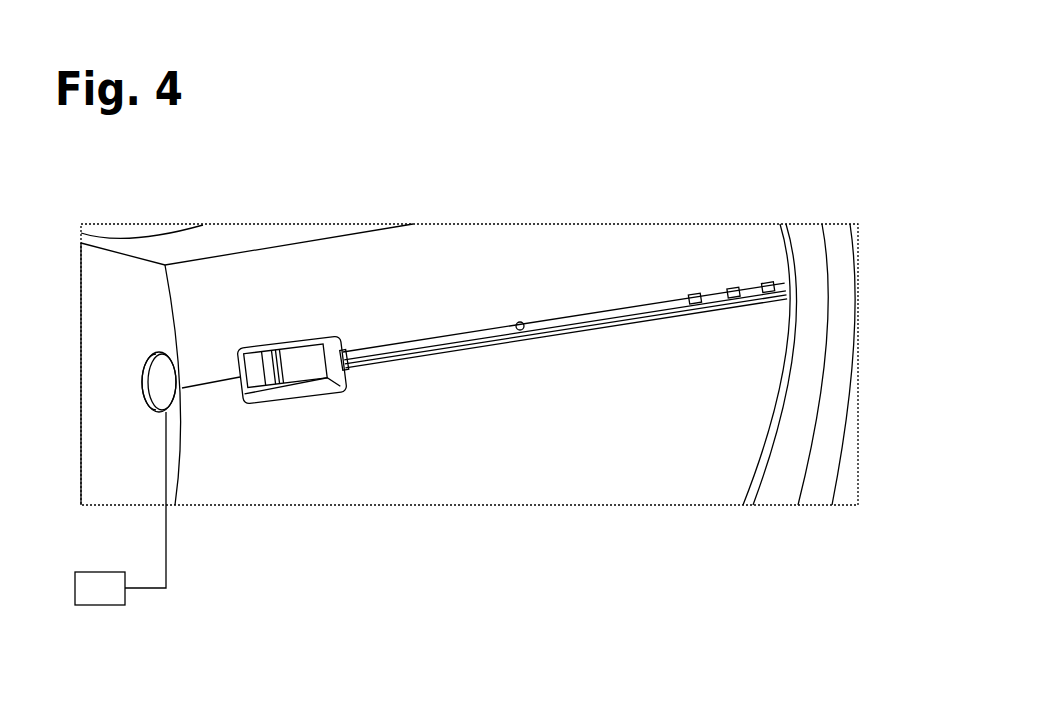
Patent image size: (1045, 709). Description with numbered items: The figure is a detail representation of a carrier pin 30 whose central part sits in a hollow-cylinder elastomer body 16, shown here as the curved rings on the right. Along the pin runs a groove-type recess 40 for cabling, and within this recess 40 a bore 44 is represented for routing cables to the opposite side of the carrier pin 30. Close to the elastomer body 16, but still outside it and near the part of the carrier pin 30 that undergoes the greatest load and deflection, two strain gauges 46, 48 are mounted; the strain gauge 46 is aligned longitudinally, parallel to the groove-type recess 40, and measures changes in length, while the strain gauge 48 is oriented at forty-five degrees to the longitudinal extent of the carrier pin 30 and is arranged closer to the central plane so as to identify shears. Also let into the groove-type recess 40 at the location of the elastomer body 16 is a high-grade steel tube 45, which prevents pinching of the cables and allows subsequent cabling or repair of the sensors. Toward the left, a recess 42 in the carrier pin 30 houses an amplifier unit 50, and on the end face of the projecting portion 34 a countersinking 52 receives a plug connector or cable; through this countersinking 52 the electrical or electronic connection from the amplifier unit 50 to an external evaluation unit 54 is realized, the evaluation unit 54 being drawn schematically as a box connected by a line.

The hollow-cylinder elastomer body 16 is at (783, 480).
The carrier pin 30 is at (578, 181).
The projecting portion 34 is at (345, 465).
The groove-type recess 40 is at (648, 306).
The recess 42 is at (259, 398).
The bore 44 is at (520, 322).
The high-grade steel tube 45 is at (770, 283).
The strain gauge 46 is at (695, 295).
The strain gauge 48 is at (733, 289).
The amplifier unit 50 is at (300, 356).
The countersinking 52 is at (162, 378).
The evaluation unit 54 is at (97, 607).